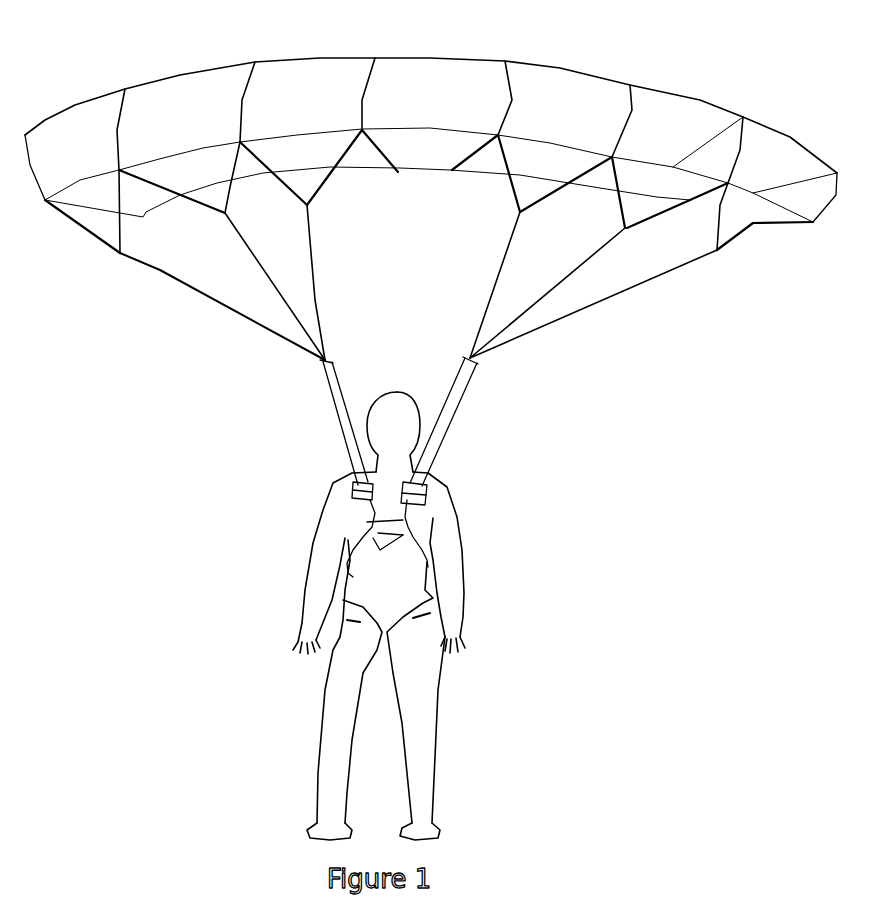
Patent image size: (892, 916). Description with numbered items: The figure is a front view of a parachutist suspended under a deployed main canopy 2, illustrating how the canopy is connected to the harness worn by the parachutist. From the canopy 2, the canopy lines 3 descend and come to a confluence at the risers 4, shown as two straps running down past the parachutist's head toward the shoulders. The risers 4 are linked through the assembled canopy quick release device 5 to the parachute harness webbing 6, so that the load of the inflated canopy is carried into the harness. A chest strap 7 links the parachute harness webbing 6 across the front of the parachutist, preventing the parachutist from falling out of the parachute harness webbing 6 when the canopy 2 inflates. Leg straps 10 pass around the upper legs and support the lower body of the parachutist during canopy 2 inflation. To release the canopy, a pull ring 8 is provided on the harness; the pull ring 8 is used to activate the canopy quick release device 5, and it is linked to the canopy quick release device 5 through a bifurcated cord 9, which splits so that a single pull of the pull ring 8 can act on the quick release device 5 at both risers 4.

The canopy 2 is at (555, 108).
The canopy lines 3 is at (208, 300).
The risers 4 is at (333, 397).
The canopy quick release device 5 is at (420, 492).
The parachute harness webbing 6 is at (420, 540).
The chest strap 7 is at (390, 522).
The pull ring 8 is at (345, 573).
The bifurcated cord 9 is at (345, 548).
The leg straps 10 is at (360, 622).